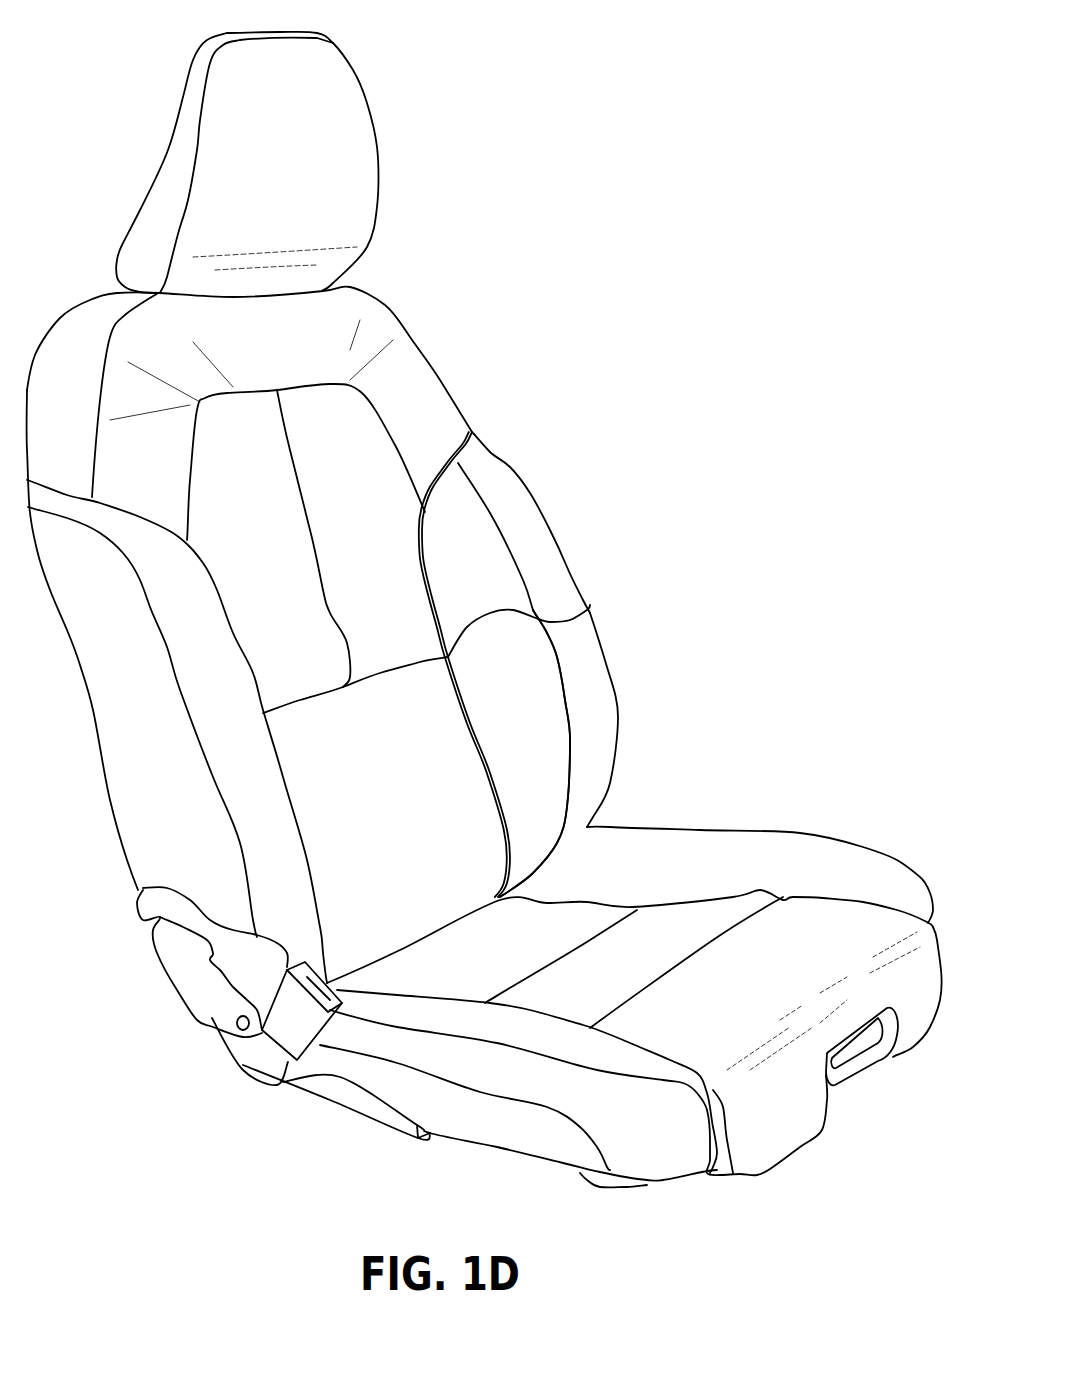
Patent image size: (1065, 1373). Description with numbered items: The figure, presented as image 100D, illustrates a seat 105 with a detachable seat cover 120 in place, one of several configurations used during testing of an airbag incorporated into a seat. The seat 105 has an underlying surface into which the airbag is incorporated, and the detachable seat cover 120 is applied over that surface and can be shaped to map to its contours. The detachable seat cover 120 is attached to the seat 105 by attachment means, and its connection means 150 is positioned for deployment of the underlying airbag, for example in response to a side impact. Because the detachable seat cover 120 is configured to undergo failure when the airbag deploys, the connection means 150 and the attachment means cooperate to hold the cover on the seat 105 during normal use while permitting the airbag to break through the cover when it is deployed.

The image 100D is at (108, 95).
The seat 105 is at (420, 365).
The connection means 150 is at (533, 493).
The detachable seat cover 120 is at (597, 723).